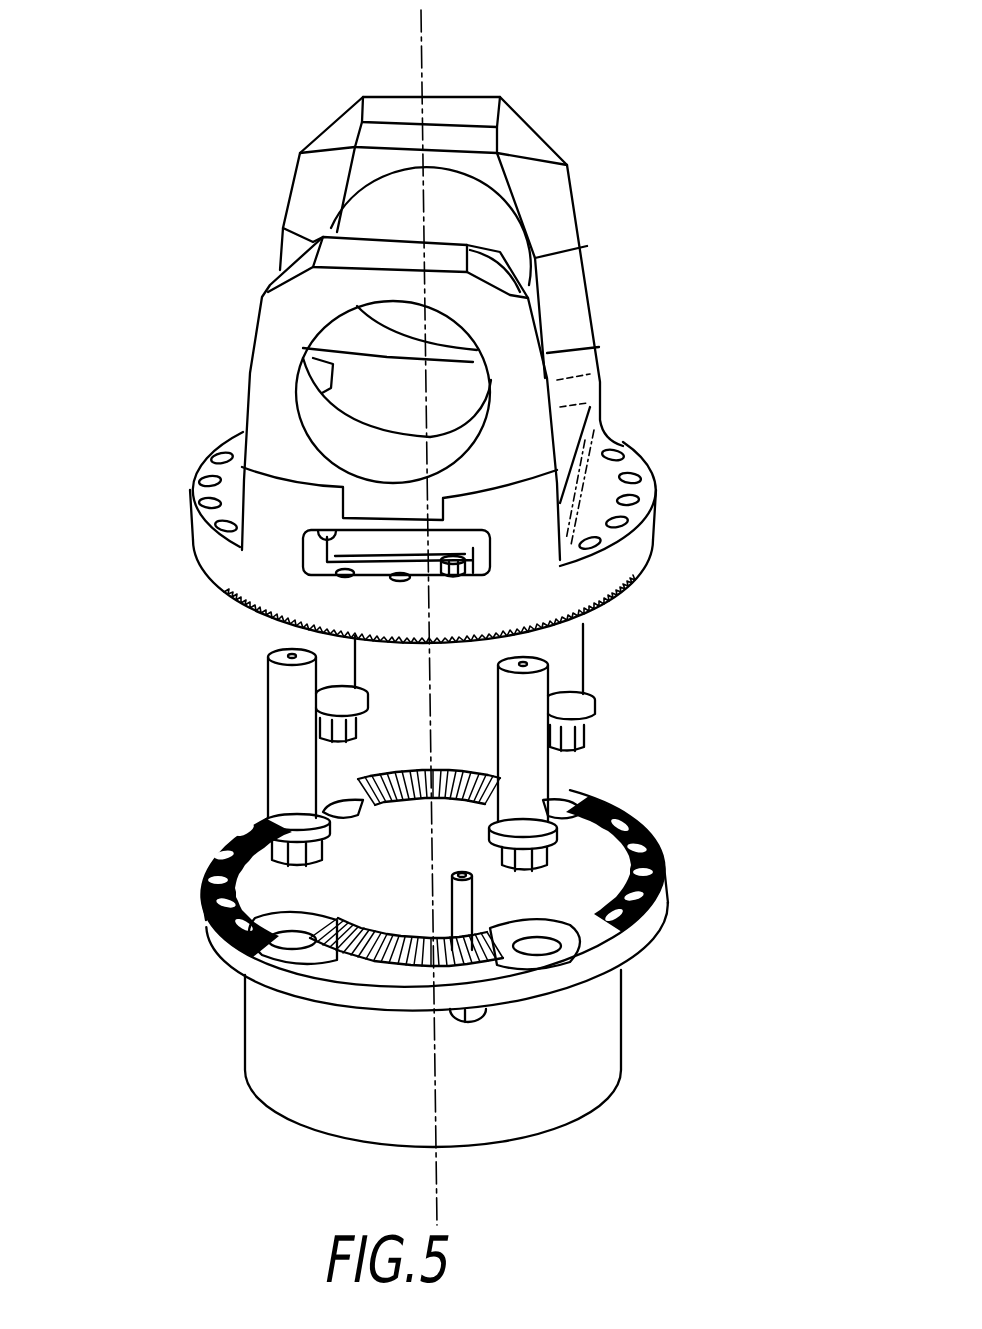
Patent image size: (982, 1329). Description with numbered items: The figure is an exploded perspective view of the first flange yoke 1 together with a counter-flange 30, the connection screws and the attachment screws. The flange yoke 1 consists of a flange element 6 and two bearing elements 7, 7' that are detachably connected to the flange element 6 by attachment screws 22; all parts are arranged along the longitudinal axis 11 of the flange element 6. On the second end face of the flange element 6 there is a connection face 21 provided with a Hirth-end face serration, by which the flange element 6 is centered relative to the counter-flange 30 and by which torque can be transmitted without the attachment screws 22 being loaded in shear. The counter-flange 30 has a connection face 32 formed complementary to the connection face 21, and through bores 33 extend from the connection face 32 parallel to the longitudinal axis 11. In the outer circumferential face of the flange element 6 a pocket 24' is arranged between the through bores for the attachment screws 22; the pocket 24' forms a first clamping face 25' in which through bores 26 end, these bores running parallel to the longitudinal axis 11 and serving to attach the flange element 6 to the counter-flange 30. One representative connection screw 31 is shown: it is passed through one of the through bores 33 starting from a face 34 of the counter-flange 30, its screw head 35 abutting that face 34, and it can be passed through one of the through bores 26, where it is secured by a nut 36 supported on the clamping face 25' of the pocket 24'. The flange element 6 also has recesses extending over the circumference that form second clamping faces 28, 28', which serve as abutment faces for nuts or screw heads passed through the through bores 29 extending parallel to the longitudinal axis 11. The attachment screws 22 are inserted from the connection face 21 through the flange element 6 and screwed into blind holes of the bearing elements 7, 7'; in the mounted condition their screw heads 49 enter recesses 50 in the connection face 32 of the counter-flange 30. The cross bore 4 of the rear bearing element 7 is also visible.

The first flange yoke 1 is at (168, 347).
The cross bore of yoke arm 4 is at (493, 215).
The flange element 6 is at (642, 531).
The bearing element 7 is at (456, 321).
The bearing element 7' is at (385, 398).
The longitudinal axis 11 is at (426, 32).
The connection face 21 is at (625, 595).
The attachment screws 22 is at (283, 748).
The pocket 24' is at (392, 529).
The first clamping face 25' is at (406, 604).
The through bores 26 is at (345, 578).
The second clamping face 28 is at (648, 507).
The second clamping face 28' is at (183, 492).
The through bores 29 is at (617, 447).
The counter-flange 30 is at (600, 1048).
The connection screw 31 is at (455, 910).
The connection face 32 is at (622, 813).
The through bores 33 is at (650, 836).
The face 34 is at (640, 956).
The screw head 35 is at (469, 1020).
The nut 36 is at (455, 580).
The screw heads 49 is at (302, 867).
The recesses 50 is at (217, 946).